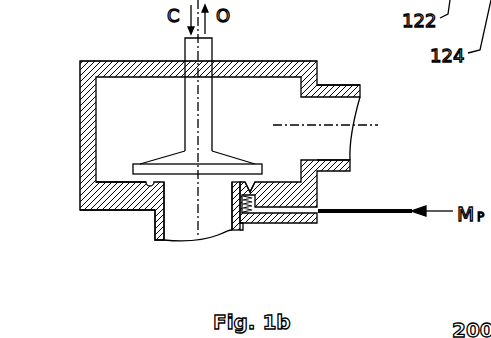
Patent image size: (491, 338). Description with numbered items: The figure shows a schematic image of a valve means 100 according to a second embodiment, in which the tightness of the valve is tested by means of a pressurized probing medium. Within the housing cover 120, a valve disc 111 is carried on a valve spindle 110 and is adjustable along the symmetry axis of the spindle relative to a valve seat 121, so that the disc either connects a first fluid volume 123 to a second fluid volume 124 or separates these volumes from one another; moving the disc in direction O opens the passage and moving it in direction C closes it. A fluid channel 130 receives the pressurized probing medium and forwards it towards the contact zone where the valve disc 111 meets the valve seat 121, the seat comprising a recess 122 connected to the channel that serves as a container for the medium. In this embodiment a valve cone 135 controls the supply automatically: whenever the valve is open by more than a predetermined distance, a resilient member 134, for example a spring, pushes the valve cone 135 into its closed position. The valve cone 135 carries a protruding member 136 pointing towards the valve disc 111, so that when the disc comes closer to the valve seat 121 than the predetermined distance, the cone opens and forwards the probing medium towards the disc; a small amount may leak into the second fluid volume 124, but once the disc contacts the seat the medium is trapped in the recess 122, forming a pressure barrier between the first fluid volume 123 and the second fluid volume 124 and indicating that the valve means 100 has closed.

The valve means 100 is at (107, 33).
The valve spindle 110 is at (212, 50).
The valve disc 111 is at (179, 150).
The housing cover 120 is at (80, 128).
The valve seat 121 is at (113, 212).
The recess 122 is at (142, 211).
The first fluid volume 123 is at (345, 110).
The second fluid volume 124 is at (180, 226).
The fluid channel 130 is at (302, 223).
The resilient member 134 is at (250, 215).
The valve cone 135 is at (238, 232).
The protruding member 136 is at (252, 185).